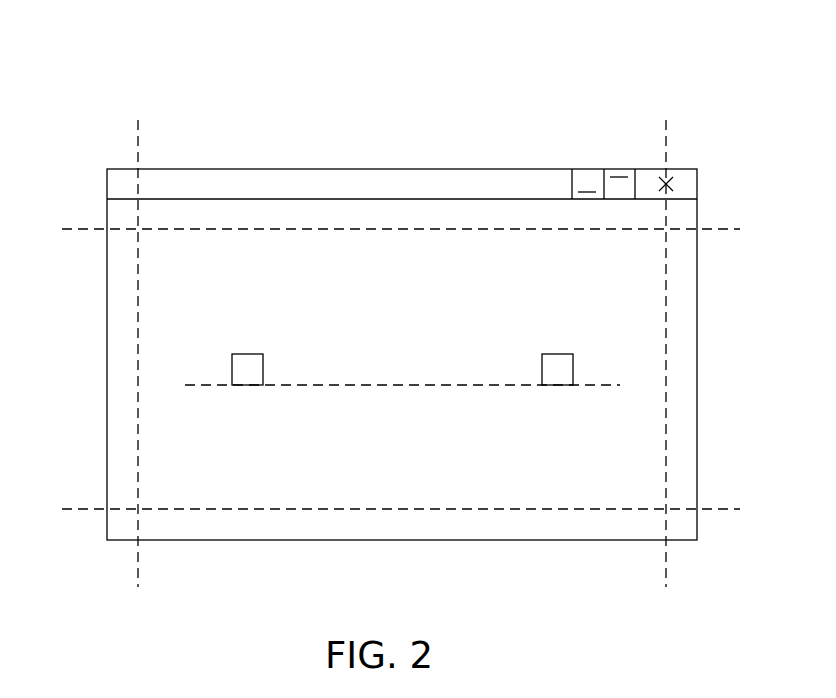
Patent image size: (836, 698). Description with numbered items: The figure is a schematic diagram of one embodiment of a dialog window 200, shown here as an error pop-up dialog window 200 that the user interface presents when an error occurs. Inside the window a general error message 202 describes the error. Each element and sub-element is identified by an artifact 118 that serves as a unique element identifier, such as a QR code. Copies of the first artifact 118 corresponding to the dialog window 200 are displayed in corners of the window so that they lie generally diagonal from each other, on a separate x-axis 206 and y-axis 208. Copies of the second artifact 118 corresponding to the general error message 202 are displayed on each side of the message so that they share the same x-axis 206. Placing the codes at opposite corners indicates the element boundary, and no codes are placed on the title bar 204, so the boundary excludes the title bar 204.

The dialog window 200 is at (320, 54).
The general error message 202 is at (370, 326).
The title bar 204 is at (107, 182).
The artifact 118 is at (107, 216).
The x-axis 206 is at (411, 231).
The y-axis 208 is at (137, 308).